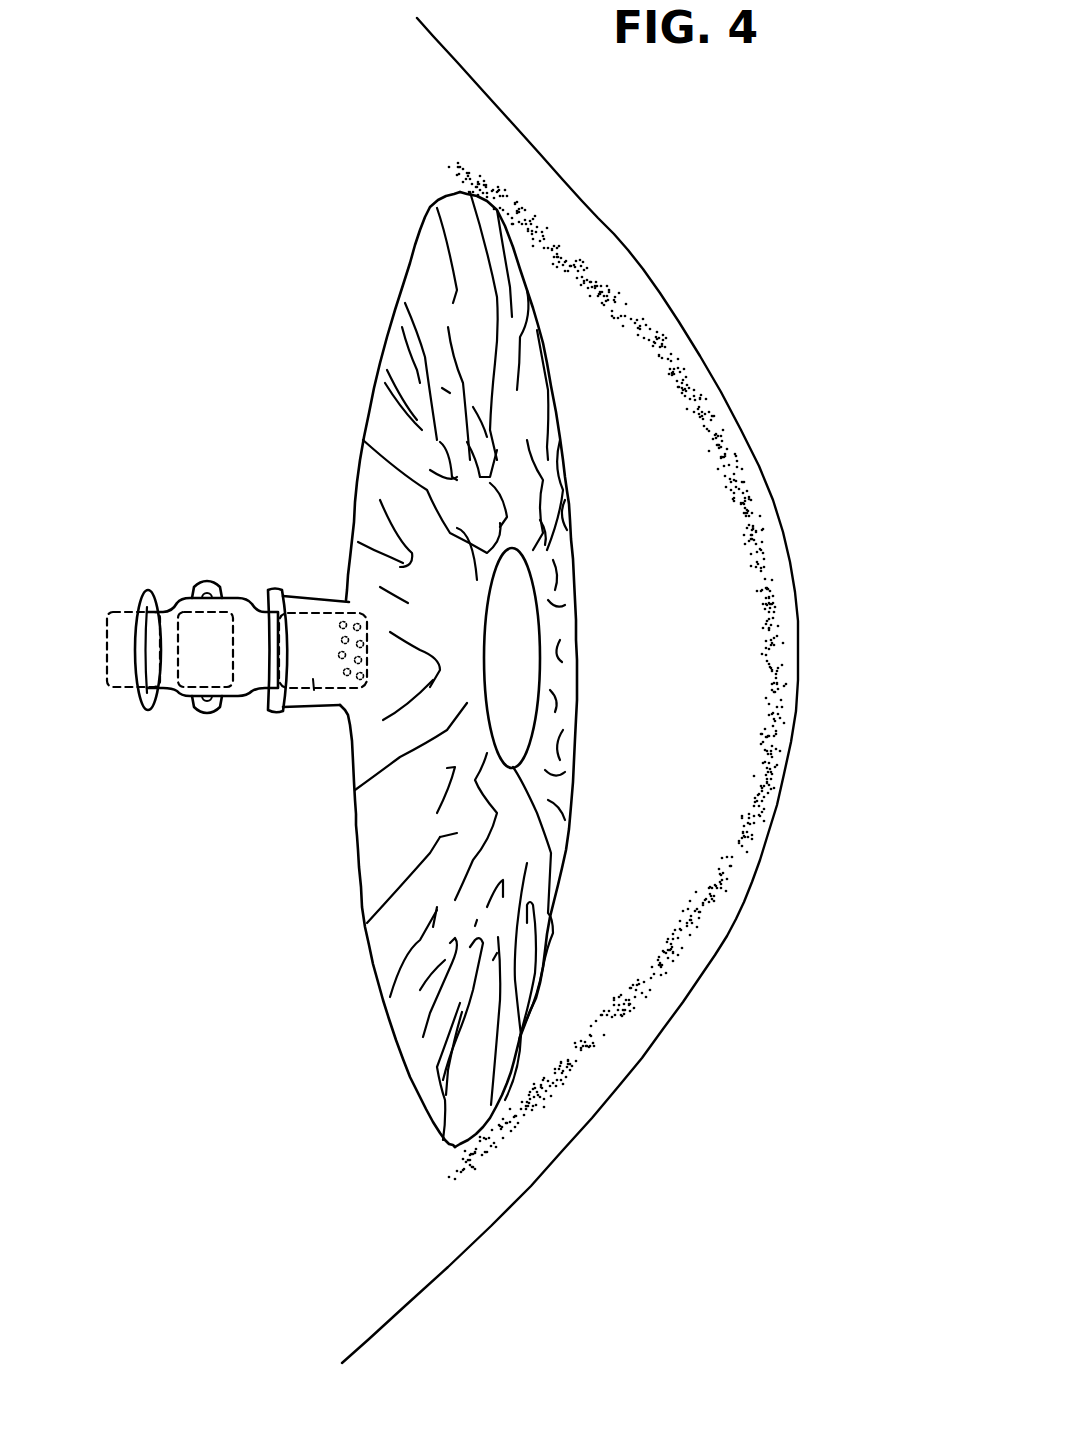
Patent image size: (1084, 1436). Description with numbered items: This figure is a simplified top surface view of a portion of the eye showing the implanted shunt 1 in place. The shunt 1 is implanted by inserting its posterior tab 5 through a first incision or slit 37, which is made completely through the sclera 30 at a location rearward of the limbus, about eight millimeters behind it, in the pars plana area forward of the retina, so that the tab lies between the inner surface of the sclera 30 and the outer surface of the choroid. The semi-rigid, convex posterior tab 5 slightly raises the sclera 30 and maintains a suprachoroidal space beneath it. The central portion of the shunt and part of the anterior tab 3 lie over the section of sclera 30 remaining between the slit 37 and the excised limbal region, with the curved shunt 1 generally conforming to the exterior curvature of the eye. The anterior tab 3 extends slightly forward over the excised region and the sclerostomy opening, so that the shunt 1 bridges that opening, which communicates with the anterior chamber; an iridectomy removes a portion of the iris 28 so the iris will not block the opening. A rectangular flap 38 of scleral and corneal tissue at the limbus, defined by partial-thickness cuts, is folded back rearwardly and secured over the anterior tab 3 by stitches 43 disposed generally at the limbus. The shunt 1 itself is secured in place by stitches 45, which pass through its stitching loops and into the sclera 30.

The shunt 1 is at (233, 598).
The anterior tab 3 is at (315, 692).
The posterior tab 5 is at (111, 613).
The iris 28 is at (523, 897).
The sclera 30 is at (218, 875).
The first incision or slit 37 is at (150, 703).
The rectangular flap 38 is at (315, 596).
The stitches 43 is at (270, 590).
The stitches 45 is at (205, 580).